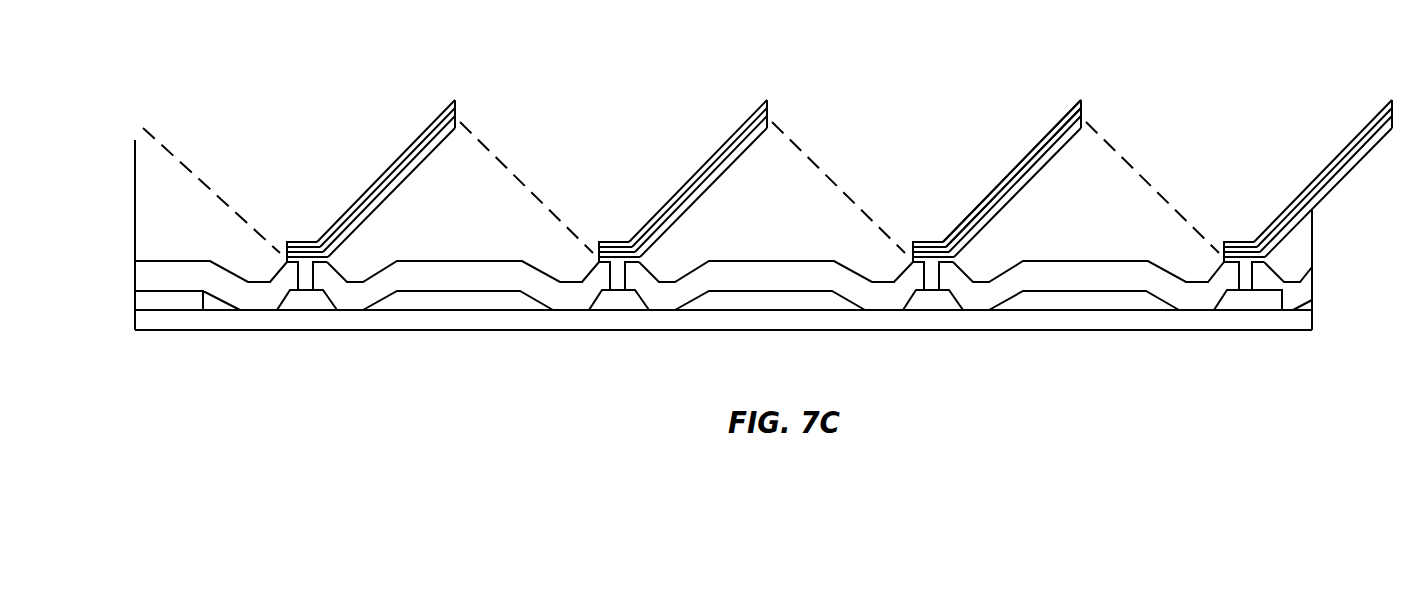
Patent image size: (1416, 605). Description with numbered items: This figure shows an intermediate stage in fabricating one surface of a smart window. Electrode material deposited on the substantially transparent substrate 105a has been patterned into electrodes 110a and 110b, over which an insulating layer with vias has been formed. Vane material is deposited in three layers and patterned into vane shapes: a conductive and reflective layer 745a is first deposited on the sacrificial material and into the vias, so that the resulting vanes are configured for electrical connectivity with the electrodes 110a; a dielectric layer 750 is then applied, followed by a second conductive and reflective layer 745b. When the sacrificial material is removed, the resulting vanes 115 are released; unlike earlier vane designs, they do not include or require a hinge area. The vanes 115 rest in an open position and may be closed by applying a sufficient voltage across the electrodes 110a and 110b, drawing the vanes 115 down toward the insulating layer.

The substantially transparent substrate 105a is at (1025, 312).
The electrode 110a is at (605, 298).
The electrode 110b is at (462, 295).
The vane 115 is at (1037, 128).
The conductive and reflective layer 745a is at (437, 148).
The conductive and reflective layer 745b is at (433, 128).
The dielectric layer 750 is at (456, 112).